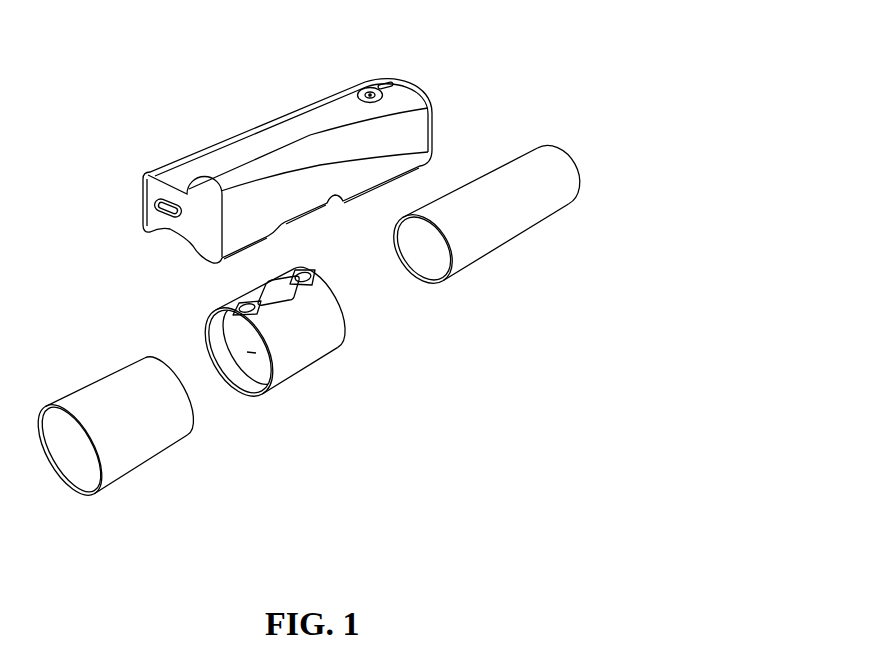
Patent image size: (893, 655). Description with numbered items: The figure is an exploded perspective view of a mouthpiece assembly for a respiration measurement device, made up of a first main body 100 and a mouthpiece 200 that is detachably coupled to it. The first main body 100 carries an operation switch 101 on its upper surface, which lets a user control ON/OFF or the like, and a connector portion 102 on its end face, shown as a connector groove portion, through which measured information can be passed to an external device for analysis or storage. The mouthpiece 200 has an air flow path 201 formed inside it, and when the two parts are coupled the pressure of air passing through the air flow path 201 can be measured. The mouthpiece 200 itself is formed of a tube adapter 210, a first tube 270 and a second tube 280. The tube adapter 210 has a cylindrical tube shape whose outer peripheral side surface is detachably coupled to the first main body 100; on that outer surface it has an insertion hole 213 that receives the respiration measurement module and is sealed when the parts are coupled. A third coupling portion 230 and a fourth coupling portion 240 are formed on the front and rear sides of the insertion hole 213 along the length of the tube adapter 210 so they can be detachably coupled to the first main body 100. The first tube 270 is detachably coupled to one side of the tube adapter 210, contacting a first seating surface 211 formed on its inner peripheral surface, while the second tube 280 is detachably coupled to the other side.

The first main body 100 is at (287, 106).
The operation switch 101 is at (369, 88).
The connector portion 102 is at (167, 214).
The mouthpiece 200 is at (214, 578).
The air flow path 201 is at (253, 353).
The tube adapter 210 is at (289, 346).
The first seating surface 211 is at (235, 380).
The insertion hole 213 is at (275, 297).
The third coupling portion 230 is at (243, 303).
The fourth coupling portion 240 is at (312, 270).
The first tube 270 is at (153, 473).
The second tube 280 is at (507, 255).